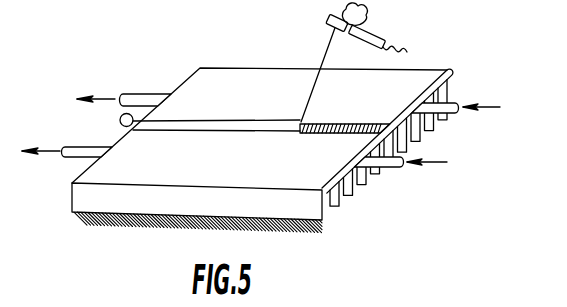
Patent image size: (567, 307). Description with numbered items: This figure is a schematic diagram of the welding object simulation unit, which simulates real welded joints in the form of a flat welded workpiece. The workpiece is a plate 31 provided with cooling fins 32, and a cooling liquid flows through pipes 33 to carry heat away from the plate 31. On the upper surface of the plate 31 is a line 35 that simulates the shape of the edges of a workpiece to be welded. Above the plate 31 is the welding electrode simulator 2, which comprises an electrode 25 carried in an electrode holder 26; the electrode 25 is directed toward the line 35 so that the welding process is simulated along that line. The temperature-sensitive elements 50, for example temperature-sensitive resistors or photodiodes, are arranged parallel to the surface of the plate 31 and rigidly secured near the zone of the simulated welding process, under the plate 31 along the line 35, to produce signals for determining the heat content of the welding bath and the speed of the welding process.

The welding electrode simulator 2 is at (358, 9).
The electrode 25 is at (317, 93).
The electrode holder 26 is at (365, 45).
The plate 31 is at (219, 77).
The cooling fins 32 is at (337, 205).
The pipes 33 is at (458, 99).
The lines simulating the shape of workpiece edges 35 is at (208, 122).
The temperature-sensitive elements 50 is at (400, 128).